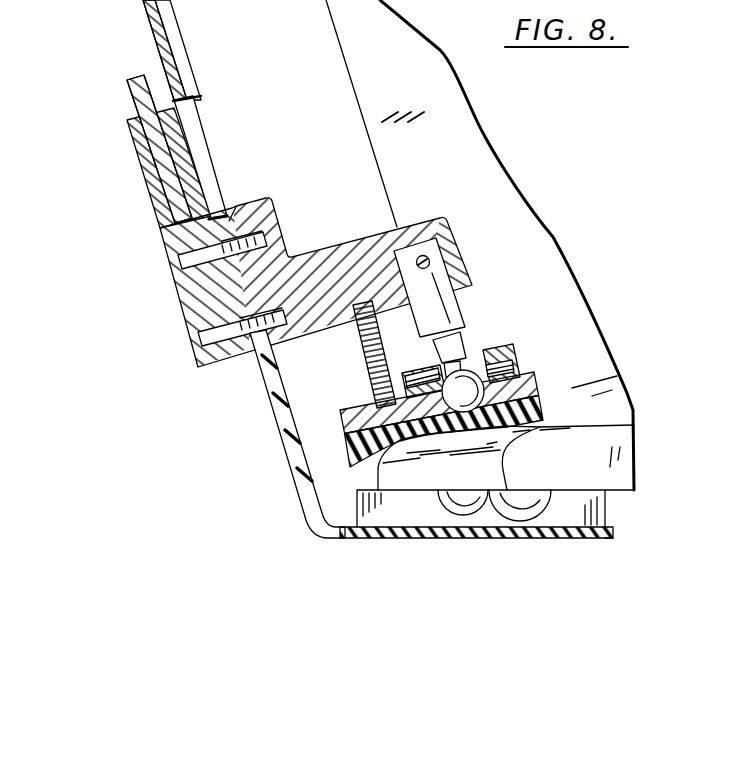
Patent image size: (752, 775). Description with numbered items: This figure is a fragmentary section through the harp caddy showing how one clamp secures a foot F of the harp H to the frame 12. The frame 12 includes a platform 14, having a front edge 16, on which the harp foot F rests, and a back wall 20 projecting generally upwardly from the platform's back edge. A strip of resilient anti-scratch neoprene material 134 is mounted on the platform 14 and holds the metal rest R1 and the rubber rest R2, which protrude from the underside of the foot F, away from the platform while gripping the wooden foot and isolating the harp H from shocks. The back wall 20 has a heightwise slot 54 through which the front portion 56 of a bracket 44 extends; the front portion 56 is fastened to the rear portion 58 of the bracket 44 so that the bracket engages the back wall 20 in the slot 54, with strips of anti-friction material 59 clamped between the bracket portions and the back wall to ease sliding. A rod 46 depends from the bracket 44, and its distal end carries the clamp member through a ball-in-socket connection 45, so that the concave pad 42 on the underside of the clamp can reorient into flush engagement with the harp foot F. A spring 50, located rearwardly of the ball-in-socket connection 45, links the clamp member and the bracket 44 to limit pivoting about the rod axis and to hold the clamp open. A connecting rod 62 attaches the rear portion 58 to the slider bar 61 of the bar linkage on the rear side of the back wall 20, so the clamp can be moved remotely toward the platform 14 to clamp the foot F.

The harp H is at (333, 11).
The frame 12 is at (410, 468).
The platform 14 is at (354, 542).
The front edge 16 is at (601, 540).
The back wall 20 is at (292, 473).
The pad 42 is at (540, 418).
The bracket 44 is at (257, 204).
The ball-in-socket connection 45 is at (468, 370).
The rod 46 is at (455, 310).
The spring 50 is at (363, 366).
The slot 54 is at (200, 126).
The front portion 56 is at (355, 262).
The rear portion 58 is at (183, 293).
The strip of anti-friction material 59 is at (270, 370).
The slider bar 61 is at (127, 88).
The connecting rod 62 is at (143, 178).
The strip of resilient anti-scratch material 134 is at (455, 530).
The harp foot F is at (557, 482).
The metal rest R1 is at (512, 512).
The rubber rest R2 is at (457, 510).